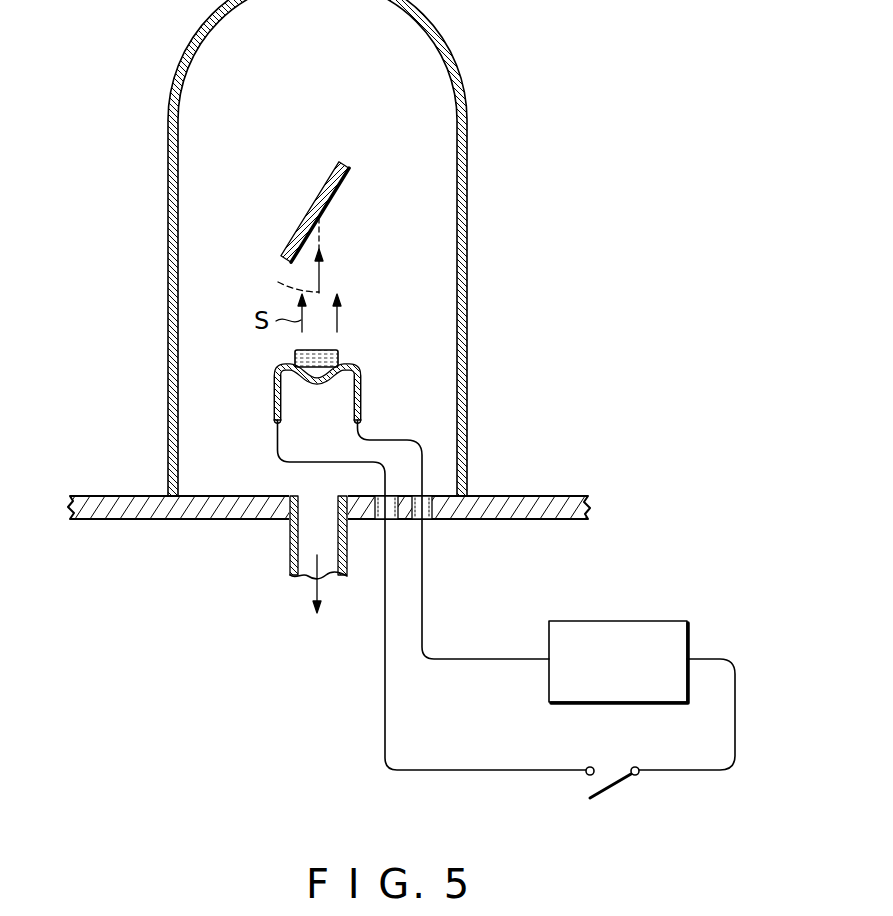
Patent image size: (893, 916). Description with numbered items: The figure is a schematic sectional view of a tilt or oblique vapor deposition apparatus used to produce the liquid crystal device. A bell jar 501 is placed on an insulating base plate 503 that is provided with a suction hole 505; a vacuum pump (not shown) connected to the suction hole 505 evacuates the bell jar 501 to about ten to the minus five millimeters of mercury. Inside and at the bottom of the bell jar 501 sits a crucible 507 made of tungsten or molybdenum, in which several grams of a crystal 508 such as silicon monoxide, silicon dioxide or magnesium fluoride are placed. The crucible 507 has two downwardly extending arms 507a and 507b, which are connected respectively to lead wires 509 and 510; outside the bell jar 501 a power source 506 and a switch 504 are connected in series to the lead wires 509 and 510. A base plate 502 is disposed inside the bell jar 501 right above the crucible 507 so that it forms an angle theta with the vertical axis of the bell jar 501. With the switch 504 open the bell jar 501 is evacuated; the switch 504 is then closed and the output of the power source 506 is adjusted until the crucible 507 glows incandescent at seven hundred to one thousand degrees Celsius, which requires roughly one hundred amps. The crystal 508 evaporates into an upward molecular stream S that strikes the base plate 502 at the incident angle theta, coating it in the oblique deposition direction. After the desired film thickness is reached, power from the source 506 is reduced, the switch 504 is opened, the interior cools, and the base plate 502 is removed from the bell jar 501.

The bell jar 501 is at (467, 371).
The base plate 502 is at (318, 202).
The insulating base plate 503 is at (527, 497).
The switch 504 is at (614, 785).
The suction hole 505 is at (290, 548).
The power source 506 is at (660, 621).
The crucible 507 is at (312, 396).
The arm 507a is at (274, 406).
The arm 507b is at (361, 400).
The crystal 508 is at (338, 351).
The lead wire 509 is at (480, 770).
The lead wire 510 is at (422, 590).